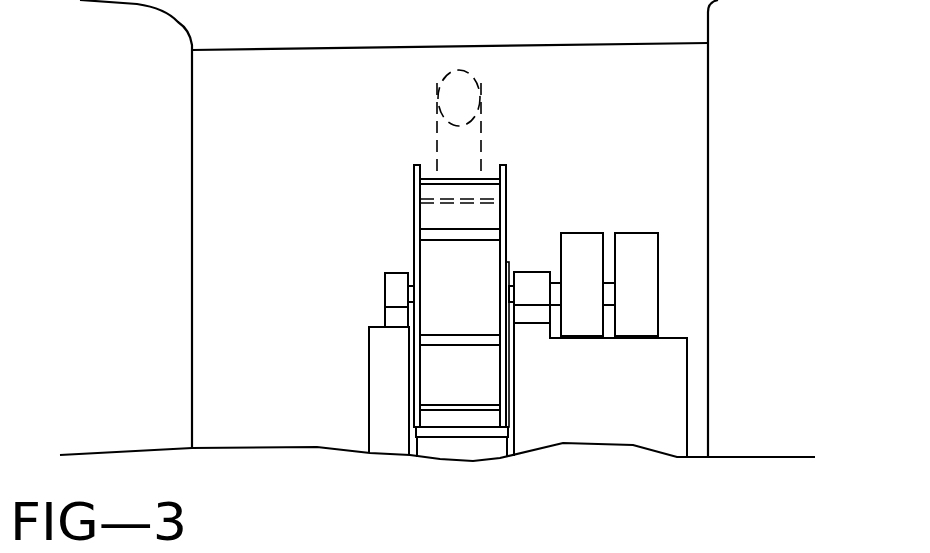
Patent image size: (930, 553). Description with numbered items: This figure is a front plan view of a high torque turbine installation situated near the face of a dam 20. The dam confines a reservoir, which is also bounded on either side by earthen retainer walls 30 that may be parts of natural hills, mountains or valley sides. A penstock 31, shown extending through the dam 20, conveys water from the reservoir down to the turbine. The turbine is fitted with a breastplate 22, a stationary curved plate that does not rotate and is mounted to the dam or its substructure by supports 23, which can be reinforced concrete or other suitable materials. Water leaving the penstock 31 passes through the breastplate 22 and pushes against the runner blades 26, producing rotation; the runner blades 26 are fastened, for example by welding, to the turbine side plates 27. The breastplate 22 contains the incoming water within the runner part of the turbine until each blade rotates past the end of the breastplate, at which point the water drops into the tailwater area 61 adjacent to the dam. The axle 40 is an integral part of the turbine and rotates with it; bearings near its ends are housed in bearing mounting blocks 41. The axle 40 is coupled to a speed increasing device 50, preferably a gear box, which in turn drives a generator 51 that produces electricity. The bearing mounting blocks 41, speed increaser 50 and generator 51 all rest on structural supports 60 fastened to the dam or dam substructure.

The dam 20 is at (658, 102).
The breastplate 22 is at (450, 440).
The supports 23 is at (437, 442).
The runner blades 26 is at (445, 231).
The turbine side plates 27 is at (418, 165).
The earthen retainer walls 30 is at (145, 137).
The penstock 31 is at (482, 135).
The axle 40 is at (508, 280).
The bearing mounting blocks 41 is at (395, 285).
The speed increasing device 50 is at (593, 242).
The generator 51 is at (632, 238).
The structural supports 60 is at (382, 393).
The tailwater area 61 is at (560, 502).